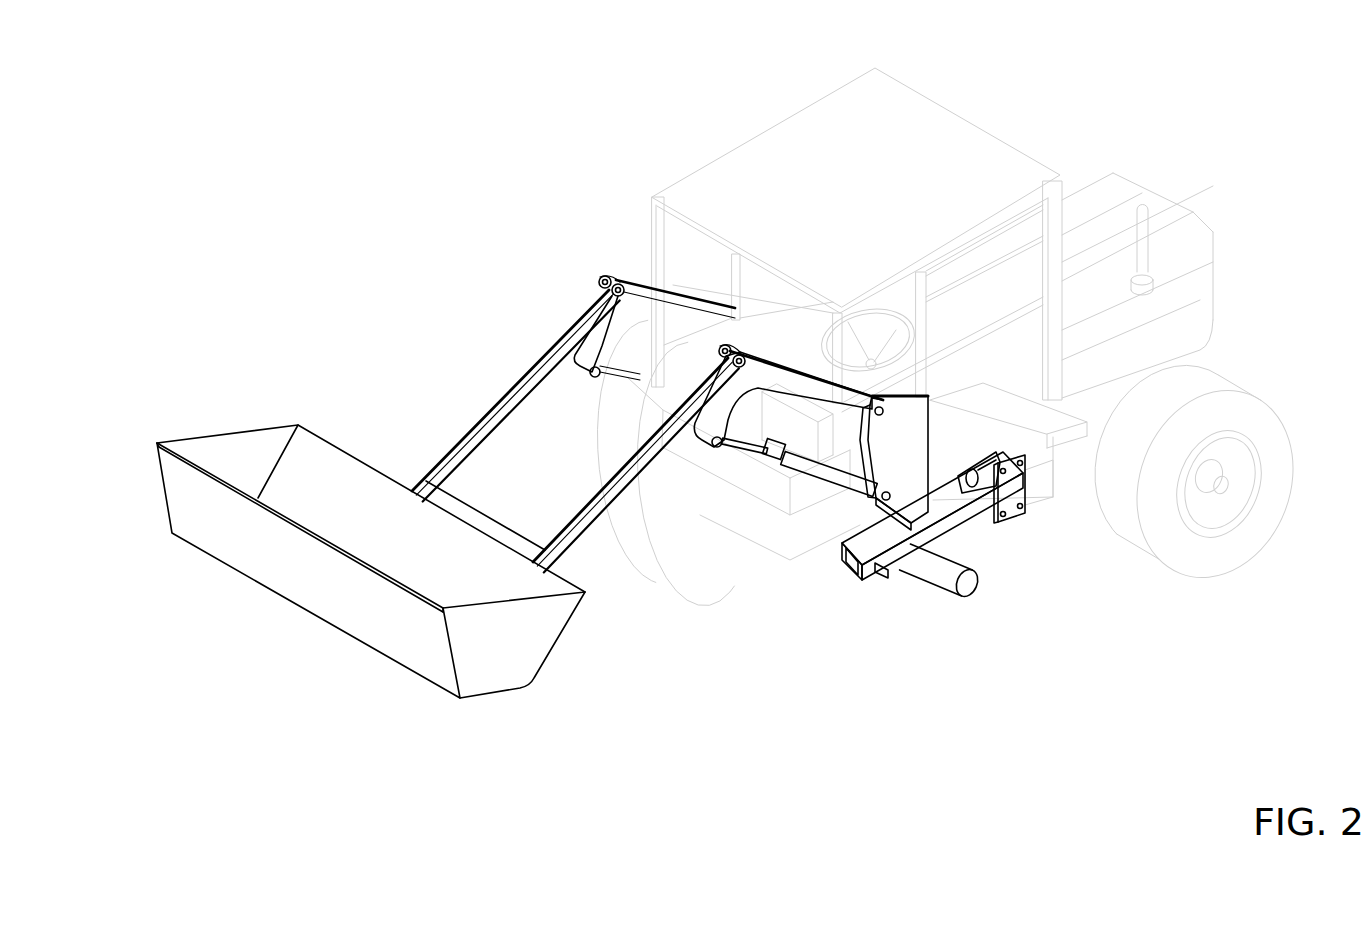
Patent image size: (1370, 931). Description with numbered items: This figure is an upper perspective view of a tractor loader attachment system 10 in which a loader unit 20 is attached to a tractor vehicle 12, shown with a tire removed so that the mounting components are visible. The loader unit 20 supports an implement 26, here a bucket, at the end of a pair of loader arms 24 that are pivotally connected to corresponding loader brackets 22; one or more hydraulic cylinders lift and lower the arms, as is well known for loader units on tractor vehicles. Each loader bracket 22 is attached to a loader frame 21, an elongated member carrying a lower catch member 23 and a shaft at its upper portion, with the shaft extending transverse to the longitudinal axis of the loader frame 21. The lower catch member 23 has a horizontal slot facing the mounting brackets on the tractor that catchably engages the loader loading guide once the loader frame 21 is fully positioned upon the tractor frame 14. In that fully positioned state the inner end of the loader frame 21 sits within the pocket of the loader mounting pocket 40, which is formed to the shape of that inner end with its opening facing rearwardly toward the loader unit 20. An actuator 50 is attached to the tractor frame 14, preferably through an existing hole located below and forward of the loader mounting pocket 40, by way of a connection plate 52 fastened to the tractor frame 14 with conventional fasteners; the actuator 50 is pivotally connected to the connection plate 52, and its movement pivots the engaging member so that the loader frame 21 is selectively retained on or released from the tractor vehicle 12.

The tractor loader attachment system 10 is at (738, 443).
The tractor vehicle 12 is at (959, 327).
The tractor frame 14 is at (1040, 488).
The loader unit 20 is at (671, 487).
The loader frame 21 is at (906, 562).
The loader bracket 22 is at (843, 548).
The lower catch member 23 is at (903, 484).
The loader arms 24 is at (585, 505).
The implement 26 is at (320, 463).
The loader mounting pocket 40 is at (978, 542).
The actuator 50 is at (1016, 520).
The connection plate 52 is at (1003, 540).